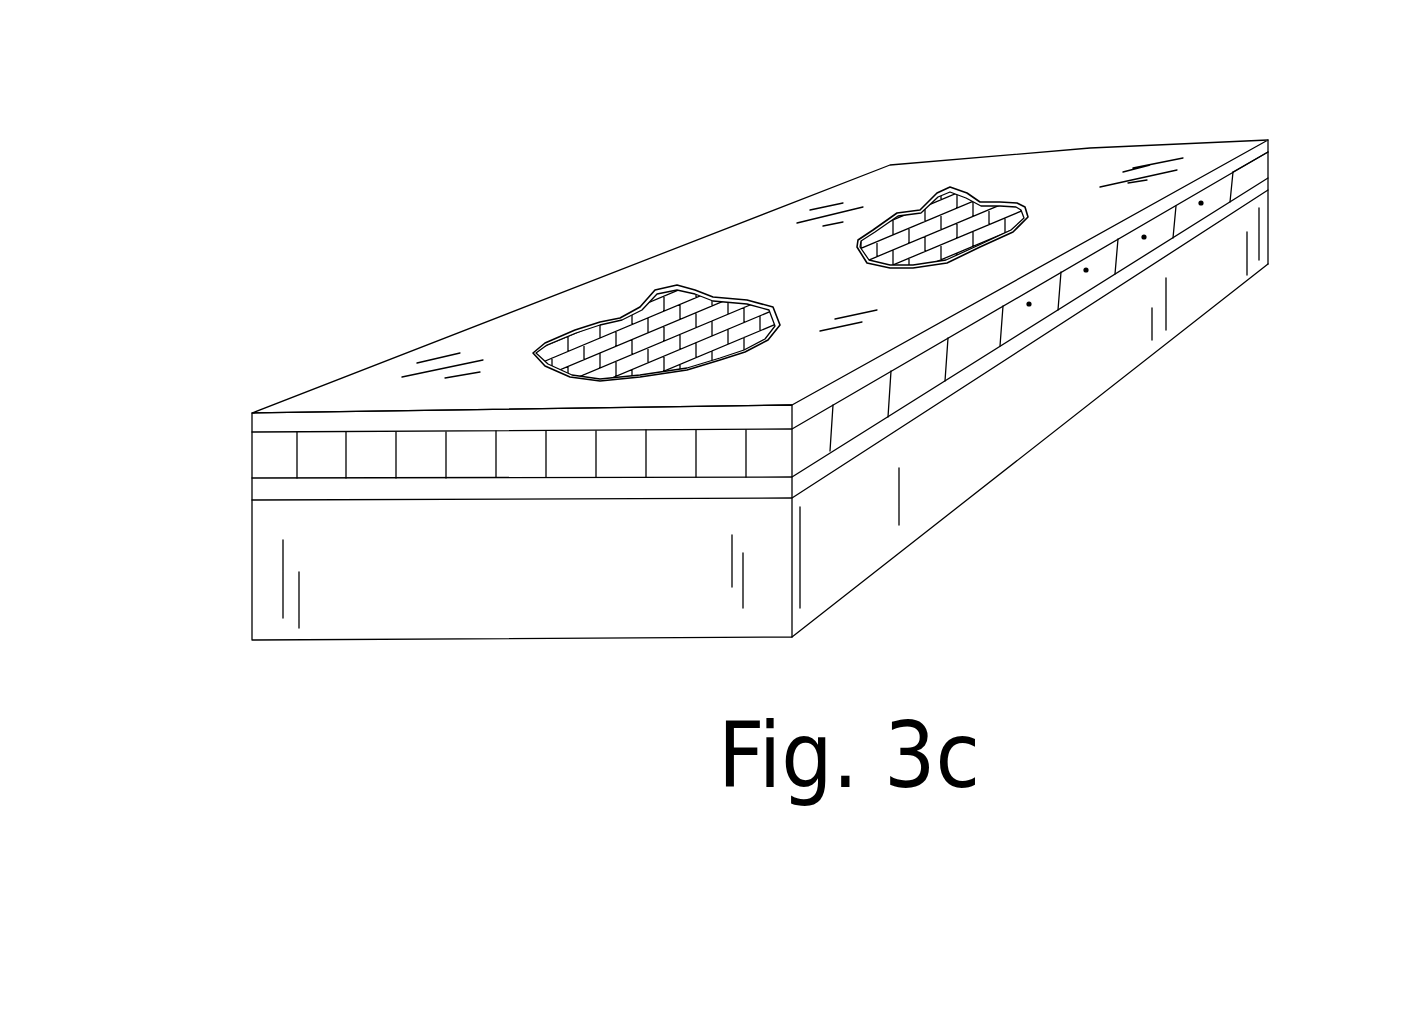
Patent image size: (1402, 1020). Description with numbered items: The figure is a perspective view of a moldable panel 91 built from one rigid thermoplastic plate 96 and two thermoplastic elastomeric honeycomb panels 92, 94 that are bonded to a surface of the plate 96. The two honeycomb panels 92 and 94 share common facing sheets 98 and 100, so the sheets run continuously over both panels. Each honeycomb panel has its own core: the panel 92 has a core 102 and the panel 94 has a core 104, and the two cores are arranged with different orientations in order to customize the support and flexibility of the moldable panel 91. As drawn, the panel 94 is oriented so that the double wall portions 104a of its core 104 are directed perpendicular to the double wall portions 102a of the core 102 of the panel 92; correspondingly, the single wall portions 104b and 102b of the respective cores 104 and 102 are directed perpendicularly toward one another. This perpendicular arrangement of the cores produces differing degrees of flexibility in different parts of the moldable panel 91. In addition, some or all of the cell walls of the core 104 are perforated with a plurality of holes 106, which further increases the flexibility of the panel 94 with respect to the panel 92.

The moldable panel 91 is at (243, 708).
The honeycomb panel 92 is at (913, 383).
The honeycomb panel 94 is at (1242, 185).
The rigid thermoplastic plate 96 is at (1070, 373).
The facing sheet 98 is at (263, 420).
The facing sheet 100 is at (273, 493).
The core 102 is at (587, 322).
The double wall portions 102a is at (727, 347).
The single wall portions 102b is at (637, 382).
The core 104 is at (952, 187).
The double wall portions 104a is at (993, 197).
The single wall portions 104b is at (1030, 217).
The holes 106 is at (1247, 173).